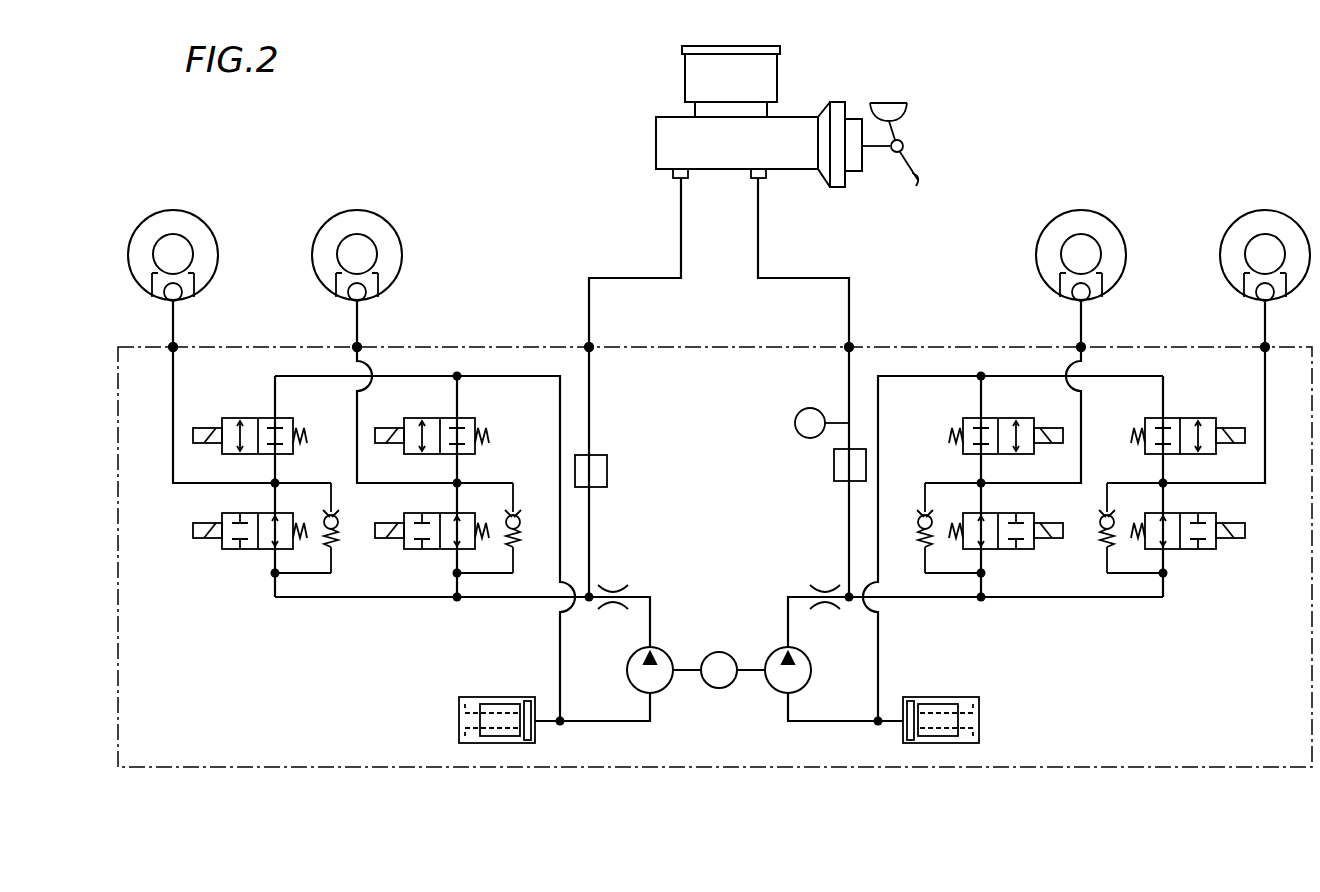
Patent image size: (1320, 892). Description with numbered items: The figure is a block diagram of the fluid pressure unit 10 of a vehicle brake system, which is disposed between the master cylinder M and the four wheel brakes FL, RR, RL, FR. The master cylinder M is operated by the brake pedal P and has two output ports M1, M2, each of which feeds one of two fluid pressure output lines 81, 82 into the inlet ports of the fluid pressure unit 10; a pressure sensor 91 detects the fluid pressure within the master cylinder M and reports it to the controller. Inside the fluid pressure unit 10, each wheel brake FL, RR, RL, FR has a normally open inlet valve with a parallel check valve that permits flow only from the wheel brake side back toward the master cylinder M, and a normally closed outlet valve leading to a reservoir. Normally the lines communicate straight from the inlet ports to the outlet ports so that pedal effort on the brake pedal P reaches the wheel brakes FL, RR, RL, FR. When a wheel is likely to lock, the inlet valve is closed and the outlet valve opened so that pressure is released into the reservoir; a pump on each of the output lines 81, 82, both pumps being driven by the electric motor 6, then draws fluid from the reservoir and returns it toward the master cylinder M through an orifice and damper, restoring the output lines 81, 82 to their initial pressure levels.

The electric motor 6 is at (718, 651).
The fluid pressure unit 10 is at (690, 346).
The fluid pressure output line 81 is at (587, 288).
The fluid pressure output line 82 is at (851, 288).
The pressure sensor 91 is at (806, 409).
The master cylinder M is at (660, 142).
The output port M1 is at (672, 176).
The output port M2 is at (767, 176).
The brake pedal P is at (918, 182).
The wheel brake FL is at (170, 207).
The wheel brake RR is at (354, 207).
The wheel brake RL is at (1084, 207).
The wheel brake FR is at (1268, 207).